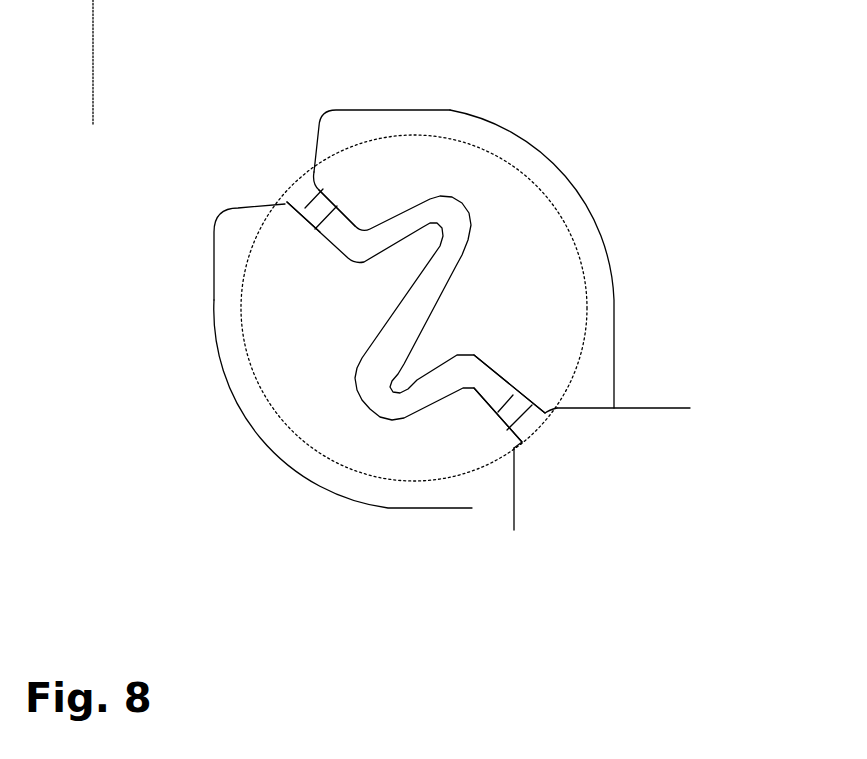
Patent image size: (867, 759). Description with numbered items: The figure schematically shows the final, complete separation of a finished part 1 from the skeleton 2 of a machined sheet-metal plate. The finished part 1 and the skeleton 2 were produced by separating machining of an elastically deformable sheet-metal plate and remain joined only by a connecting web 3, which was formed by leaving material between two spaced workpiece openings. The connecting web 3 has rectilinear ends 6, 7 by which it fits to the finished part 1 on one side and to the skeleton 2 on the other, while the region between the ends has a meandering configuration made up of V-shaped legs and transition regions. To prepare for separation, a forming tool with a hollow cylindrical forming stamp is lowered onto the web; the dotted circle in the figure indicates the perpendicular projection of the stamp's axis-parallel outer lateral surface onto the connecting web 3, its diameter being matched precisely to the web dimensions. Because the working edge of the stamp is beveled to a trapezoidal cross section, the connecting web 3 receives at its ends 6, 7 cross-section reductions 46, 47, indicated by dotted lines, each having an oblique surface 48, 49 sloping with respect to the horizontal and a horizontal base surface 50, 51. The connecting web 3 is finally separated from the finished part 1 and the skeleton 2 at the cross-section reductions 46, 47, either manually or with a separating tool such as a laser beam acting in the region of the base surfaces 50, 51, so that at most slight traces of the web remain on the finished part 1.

The finished part 1 is at (621, 499).
The skeleton 2 is at (141, 49).
The connecting web 3 is at (392, 303).
The rectilinear end 6 is at (515, 383).
The rectilinear end 7 is at (330, 206).
The cross-section reduction 46 is at (500, 428).
The cross-section reduction 47 is at (300, 226).
The oblique surface 48 is at (507, 412).
The oblique surface 49 is at (331, 208).
The horizontal base surface 50 is at (532, 426).
The horizontal base surface 51 is at (295, 193).